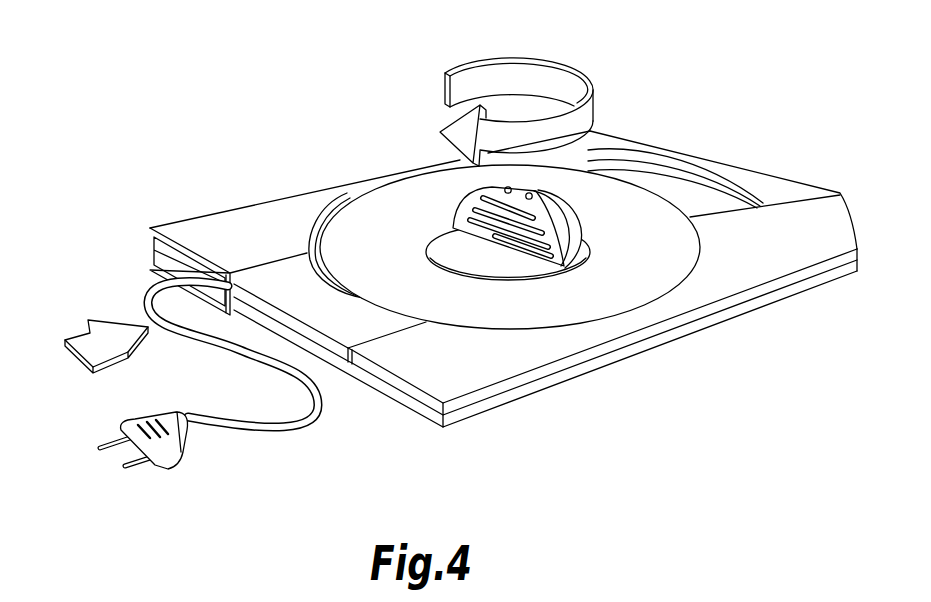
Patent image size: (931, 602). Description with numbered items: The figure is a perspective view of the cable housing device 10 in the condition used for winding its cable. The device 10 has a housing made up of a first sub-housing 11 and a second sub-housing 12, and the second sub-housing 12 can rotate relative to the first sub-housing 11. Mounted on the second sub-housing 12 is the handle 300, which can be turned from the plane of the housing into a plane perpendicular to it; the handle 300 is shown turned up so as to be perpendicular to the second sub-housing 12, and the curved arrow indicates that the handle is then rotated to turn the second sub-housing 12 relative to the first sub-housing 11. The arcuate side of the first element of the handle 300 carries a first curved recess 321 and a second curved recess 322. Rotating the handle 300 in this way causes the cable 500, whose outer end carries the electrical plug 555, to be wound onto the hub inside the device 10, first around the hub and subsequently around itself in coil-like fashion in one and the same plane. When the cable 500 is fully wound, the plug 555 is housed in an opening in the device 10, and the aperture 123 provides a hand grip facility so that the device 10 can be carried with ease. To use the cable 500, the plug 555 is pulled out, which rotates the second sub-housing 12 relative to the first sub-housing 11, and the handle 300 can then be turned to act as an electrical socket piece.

The cable housing device 10 is at (450, 313).
The first sub-housing 11 is at (498, 362).
The second sub-housing 12 is at (608, 303).
The aperture 123 is at (686, 197).
The handle 300 is at (539, 228).
The first curved recess 321 is at (504, 188).
The second curved recess 322 is at (533, 194).
The cable 500 is at (308, 417).
The electrical plug 555 is at (128, 421).